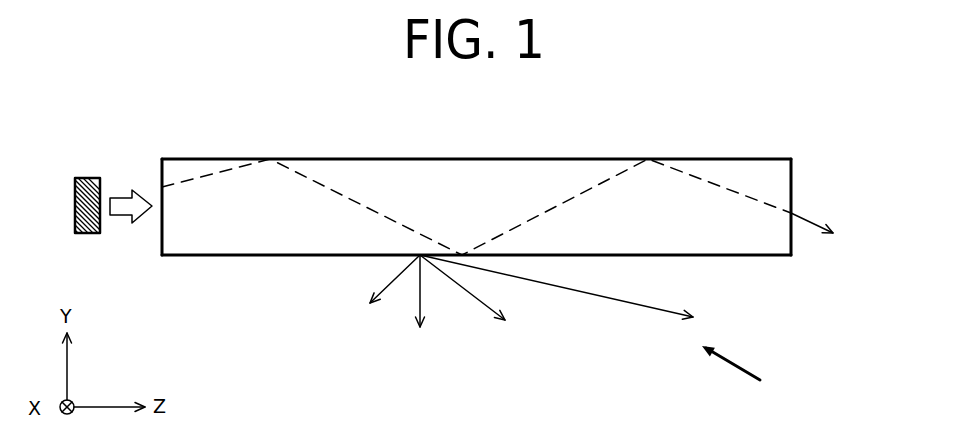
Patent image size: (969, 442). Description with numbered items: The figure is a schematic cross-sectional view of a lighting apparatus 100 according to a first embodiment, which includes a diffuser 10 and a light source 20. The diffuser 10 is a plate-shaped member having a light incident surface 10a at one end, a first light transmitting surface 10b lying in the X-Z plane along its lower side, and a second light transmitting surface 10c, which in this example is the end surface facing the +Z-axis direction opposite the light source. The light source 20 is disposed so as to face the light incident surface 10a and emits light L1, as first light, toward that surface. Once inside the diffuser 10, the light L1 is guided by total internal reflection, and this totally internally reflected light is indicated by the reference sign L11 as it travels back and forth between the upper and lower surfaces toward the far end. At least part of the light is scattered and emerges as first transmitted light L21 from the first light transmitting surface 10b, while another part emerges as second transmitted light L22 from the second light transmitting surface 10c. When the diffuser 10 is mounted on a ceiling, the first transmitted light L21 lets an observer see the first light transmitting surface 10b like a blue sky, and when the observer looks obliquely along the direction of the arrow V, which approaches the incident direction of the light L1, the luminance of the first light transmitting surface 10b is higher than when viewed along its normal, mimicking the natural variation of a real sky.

The lighting apparatus 100 is at (637, 126).
The diffuser 10 is at (343, 158).
The light incident surface 10a is at (162, 168).
The first light transmitting surface 10b is at (282, 257).
The second light transmitting surface 10c is at (791, 172).
The light source 20 is at (82, 177).
The light L1 is at (127, 216).
The totally internally reflected light L11 is at (236, 167).
The first transmitted light L21 is at (392, 290).
The second transmitted light L22 is at (813, 230).
The arrow V is at (735, 365).